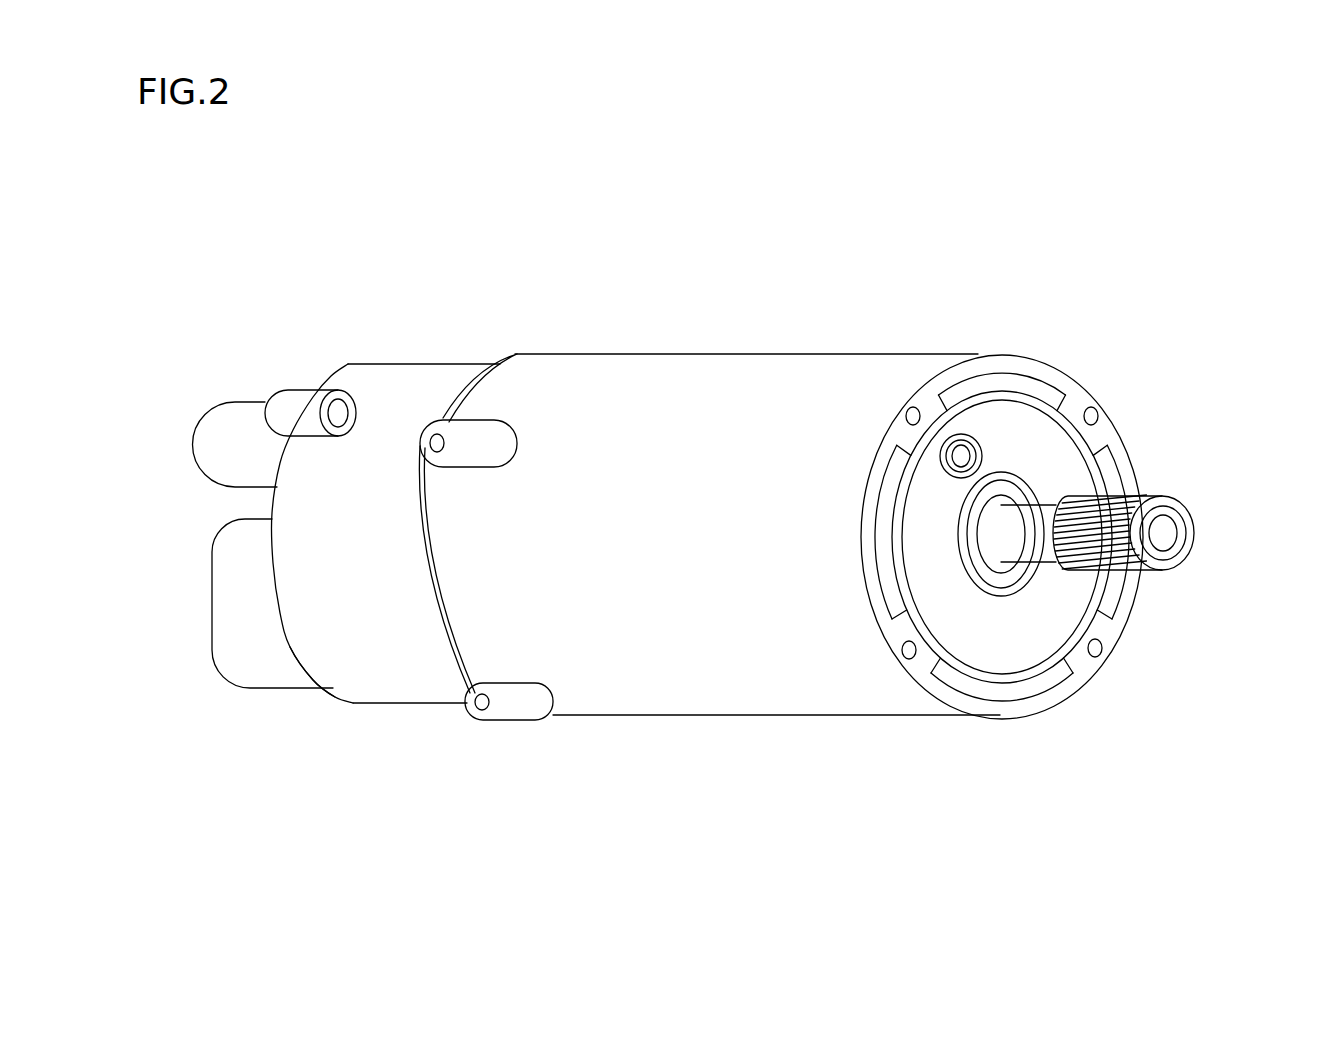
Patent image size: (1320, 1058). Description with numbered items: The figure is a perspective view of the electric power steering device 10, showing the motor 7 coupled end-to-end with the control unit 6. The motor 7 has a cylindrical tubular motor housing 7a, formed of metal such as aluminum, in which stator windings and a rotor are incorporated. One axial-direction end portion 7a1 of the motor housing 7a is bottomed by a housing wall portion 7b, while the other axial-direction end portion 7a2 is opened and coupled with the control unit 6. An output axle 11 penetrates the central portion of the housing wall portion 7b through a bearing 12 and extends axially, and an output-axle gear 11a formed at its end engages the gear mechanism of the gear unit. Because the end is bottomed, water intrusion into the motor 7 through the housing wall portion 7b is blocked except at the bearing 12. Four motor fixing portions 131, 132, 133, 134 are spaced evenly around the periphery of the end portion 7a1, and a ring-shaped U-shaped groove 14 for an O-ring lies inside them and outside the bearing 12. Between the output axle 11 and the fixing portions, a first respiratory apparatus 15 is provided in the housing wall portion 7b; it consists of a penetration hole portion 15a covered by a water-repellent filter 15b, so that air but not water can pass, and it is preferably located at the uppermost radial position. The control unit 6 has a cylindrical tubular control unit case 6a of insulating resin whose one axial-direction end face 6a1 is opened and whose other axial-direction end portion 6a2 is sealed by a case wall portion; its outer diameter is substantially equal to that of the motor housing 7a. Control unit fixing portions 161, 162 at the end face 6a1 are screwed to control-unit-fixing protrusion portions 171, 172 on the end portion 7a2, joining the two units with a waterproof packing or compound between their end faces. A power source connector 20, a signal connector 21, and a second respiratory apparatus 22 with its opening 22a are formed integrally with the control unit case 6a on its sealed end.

The electric power steering device 10 is at (818, 244).
The motor 7 is at (712, 327).
The motor housing 7a is at (596, 378).
The one axial-direction end portion 7a1 is at (935, 366).
The other axial-direction end portion 7a2 is at (497, 355).
The housing wall portion 7b is at (998, 637).
The output axle 11 is at (1073, 482).
The output-axle gear 11a is at (1107, 566).
The bearing 12 is at (1008, 566).
The U-shaped groove 14 is at (1040, 397).
The first respiratory apparatus 15 is at (1068, 284).
The penetration hole portion 15a is at (965, 440).
The filter 15b is at (962, 452).
The motor fixing portion 131 is at (893, 415).
The motor fixing portion 132 is at (910, 673).
The motor fixing portion 133 is at (1095, 667).
The motor fixing portion 134 is at (1112, 420).
The control unit 6 is at (382, 338).
The control unit case 6a is at (350, 670).
The one axial-direction end face 6a1 is at (447, 655).
The other axial-direction end portion 6a2 is at (303, 655).
The power source connector 20 is at (218, 418).
The signal connector 21 is at (253, 638).
The second respiratory apparatus 22 is at (284, 365).
The boss hole 22a is at (300, 397).
The control unit fixing portion 161 is at (420, 430).
The control unit fixing portion 162 is at (468, 708).
The control-unit-fixing protrusion portion 171 is at (467, 440).
The control-unit-fixing protrusion portion 172 is at (517, 712).